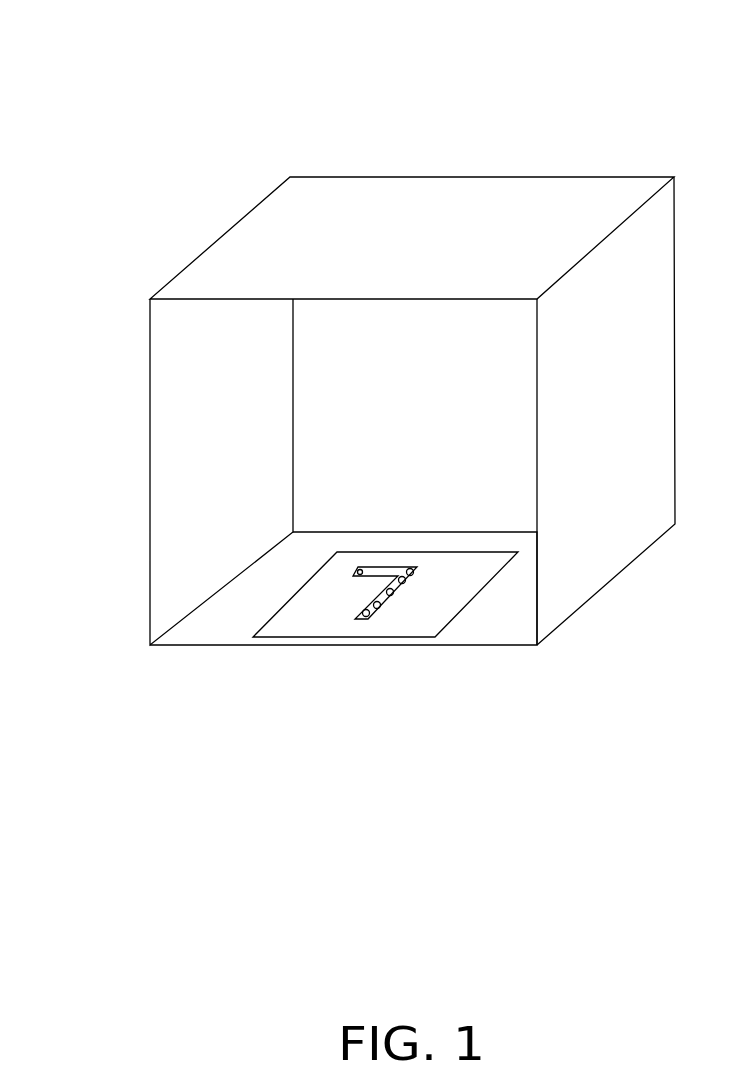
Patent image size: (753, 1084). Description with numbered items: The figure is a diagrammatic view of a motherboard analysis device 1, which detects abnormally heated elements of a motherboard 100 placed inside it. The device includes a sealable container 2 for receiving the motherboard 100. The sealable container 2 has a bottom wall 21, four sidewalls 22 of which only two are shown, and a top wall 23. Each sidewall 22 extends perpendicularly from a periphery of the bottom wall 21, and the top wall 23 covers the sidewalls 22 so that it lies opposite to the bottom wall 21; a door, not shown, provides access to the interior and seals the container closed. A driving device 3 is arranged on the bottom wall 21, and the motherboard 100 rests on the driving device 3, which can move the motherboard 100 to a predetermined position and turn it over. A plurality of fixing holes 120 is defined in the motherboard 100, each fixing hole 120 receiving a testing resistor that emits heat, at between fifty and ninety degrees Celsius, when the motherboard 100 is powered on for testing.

The motherboard analysis device 1 is at (406, 74).
The sealable container 2 is at (200, 252).
The bottom wall 21 is at (210, 627).
The sidewall 22 is at (180, 465).
The top wall 23 is at (387, 190).
The driving device 3 is at (388, 627).
The motherboard 100 is at (388, 598).
The fixing hole 120 is at (357, 574).